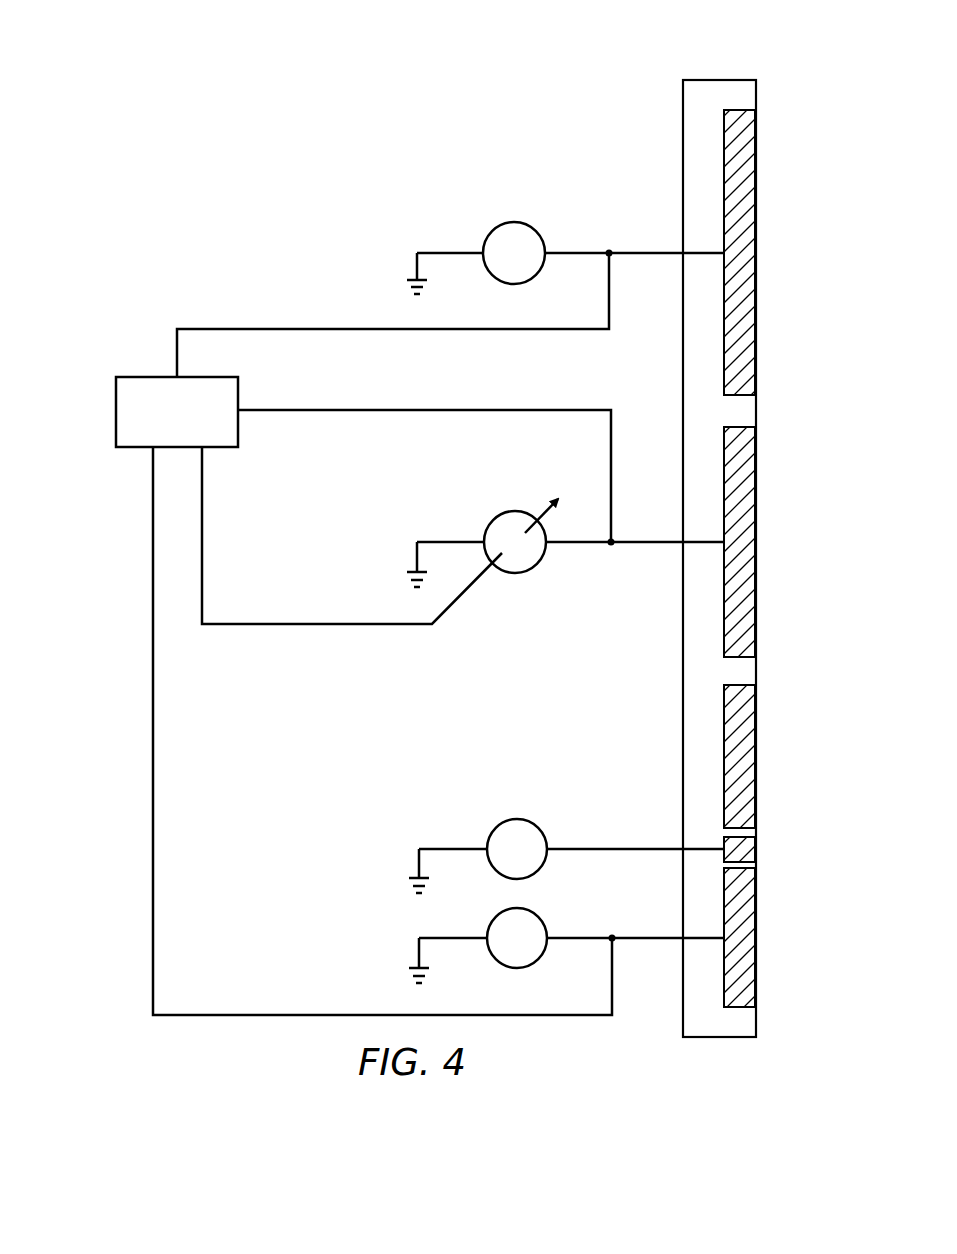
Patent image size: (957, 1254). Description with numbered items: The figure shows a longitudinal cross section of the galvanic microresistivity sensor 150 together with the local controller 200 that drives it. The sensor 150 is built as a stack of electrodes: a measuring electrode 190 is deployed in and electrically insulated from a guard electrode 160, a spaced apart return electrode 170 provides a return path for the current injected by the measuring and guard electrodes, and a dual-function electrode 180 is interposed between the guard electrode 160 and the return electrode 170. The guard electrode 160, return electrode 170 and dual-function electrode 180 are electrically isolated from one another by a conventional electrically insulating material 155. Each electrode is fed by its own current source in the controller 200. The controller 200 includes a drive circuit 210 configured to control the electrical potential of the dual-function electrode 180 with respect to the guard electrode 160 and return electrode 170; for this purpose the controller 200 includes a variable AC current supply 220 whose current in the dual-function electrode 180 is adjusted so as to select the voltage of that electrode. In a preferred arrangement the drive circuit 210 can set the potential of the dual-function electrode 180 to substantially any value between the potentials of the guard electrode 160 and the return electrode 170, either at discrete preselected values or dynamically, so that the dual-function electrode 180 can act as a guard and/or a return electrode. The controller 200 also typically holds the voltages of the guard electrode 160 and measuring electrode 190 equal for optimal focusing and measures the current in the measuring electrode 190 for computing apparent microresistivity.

The galvanic microresistivity sensor 150 is at (718, 78).
The electrically insulating material 155 is at (718, 1026).
The guard electrode 160 is at (757, 758).
The return electrode 170 is at (757, 251).
The dual-function electrode 180 is at (757, 542).
The measuring electrode 190 is at (757, 849).
The local controller 200 is at (220, 196).
The drive circuit 210 is at (116, 412).
The variable AC current supply 220 is at (468, 593).